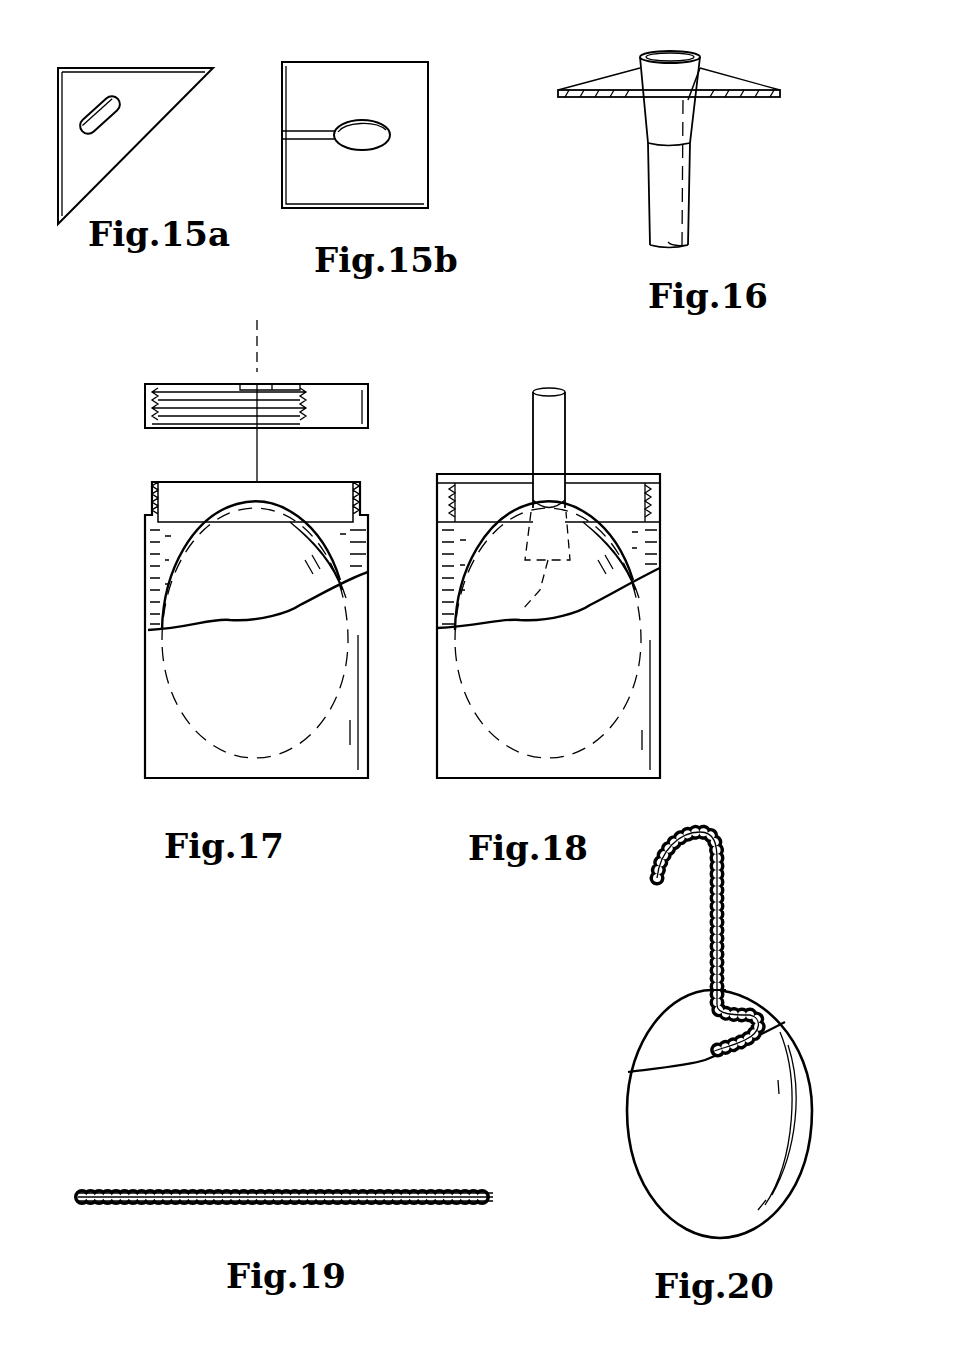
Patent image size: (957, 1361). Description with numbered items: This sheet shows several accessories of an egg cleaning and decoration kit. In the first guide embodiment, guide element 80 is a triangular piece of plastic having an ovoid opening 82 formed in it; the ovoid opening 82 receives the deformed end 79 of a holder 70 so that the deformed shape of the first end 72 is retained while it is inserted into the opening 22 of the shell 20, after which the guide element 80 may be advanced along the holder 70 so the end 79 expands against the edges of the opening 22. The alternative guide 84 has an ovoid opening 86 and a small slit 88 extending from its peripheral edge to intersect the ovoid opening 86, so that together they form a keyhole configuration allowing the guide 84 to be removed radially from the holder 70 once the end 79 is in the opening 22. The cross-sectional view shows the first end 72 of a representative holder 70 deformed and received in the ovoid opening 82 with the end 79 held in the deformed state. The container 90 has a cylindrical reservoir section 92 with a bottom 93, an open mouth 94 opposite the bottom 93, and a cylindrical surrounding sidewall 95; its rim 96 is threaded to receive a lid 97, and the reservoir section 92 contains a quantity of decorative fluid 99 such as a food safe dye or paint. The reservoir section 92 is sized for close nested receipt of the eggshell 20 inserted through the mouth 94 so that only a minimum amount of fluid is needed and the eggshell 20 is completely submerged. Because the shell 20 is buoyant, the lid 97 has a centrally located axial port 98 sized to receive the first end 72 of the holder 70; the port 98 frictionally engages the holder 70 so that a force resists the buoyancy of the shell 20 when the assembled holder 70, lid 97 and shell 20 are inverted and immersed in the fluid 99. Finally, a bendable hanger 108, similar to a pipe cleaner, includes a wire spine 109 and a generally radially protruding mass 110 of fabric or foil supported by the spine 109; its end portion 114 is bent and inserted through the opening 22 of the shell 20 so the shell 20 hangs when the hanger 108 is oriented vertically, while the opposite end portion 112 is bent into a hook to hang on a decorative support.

In FIG. 15A, the guide element 80 is at (160, 55).
In FIG. 16, the guide element 80 is at (760, 90).
In FIG. 15A, the ovoid opening 82 is at (110, 120).
In FIG. 16, the ovoid opening 82 is at (702, 112).
In FIG. 15B, the alternative guide 84 is at (432, 58).
In FIG. 15B, the ovoid opening 86 is at (372, 132).
In FIG. 15B, the slit 88 is at (292, 128).
In FIG. 16, the deformed end 79 is at (684, 52).
In FIG. 18, the deformed end 79 is at (526, 580).
In FIG. 16, the first end 72 is at (682, 182).
In FIG. 18, the first end 72 is at (556, 410).
In FIG. 16, the holder 70 is at (681, 129).
In FIG. 18, the holder 70 is at (541, 485).
In FIG. 17, the container 90 is at (238, 574).
In FIG. 18, the container 90 is at (623, 569).
In FIG. 17, the reservoir section 92 is at (150, 626).
In FIG. 18, the reservoir section 92 is at (548, 598).
In FIG. 17, the bottom 93 is at (284, 658).
In FIG. 17, the open mouth 94 is at (298, 627).
In FIG. 17, the sidewall 95 is at (370, 664).
In FIG. 17, the rim 96 is at (362, 500).
In FIG. 17, the lid 97 is at (346, 383).
In FIG. 18, the lid 97 is at (630, 474).
In FIG. 17, the axial port 98 is at (284, 380).
In FIG. 18, the axial port 98 is at (568, 472).
In FIG. 17, the decorative fluid 99 is at (166, 540).
In FIG. 18, the decorative fluid 99 is at (640, 540).
In FIG. 17, the eggshell 20 is at (186, 598).
In FIG. 18, the eggshell 20 is at (600, 580).
In FIG. 20, the eggshell 20 is at (630, 1072).
In FIG. 19, the bendable hanger 108 is at (277, 1147).
In FIG. 20, the bendable hanger 108 is at (755, 917).
In FIG. 19, the wire spine 109 is at (205, 1190).
In FIG. 19, the radially protruding mass 110 is at (114, 1190).
In FIG. 20, the end portion 112 is at (698, 828).
In FIG. 20, the end portion 114 is at (768, 1012).
In FIG. 20, the opening 22 is at (724, 982).